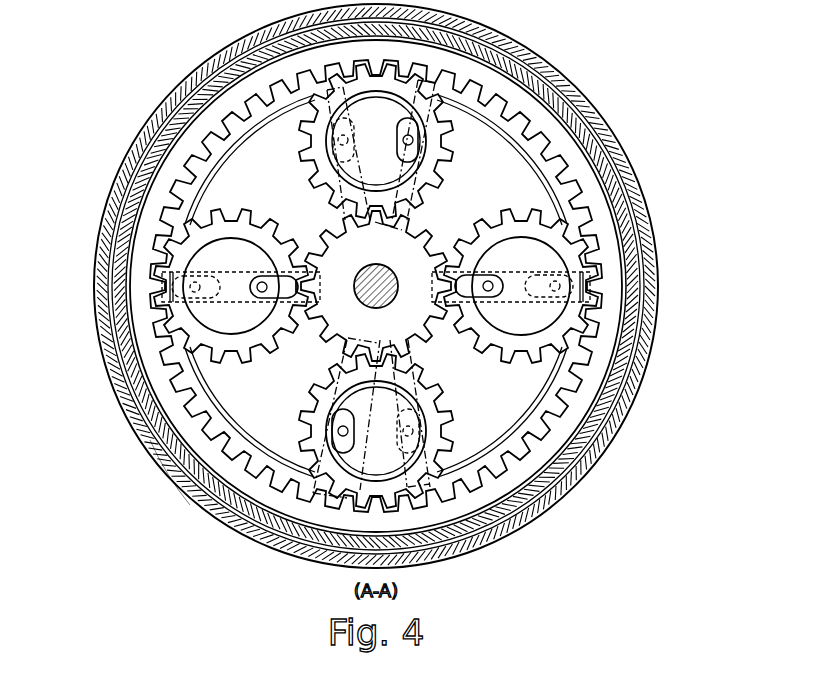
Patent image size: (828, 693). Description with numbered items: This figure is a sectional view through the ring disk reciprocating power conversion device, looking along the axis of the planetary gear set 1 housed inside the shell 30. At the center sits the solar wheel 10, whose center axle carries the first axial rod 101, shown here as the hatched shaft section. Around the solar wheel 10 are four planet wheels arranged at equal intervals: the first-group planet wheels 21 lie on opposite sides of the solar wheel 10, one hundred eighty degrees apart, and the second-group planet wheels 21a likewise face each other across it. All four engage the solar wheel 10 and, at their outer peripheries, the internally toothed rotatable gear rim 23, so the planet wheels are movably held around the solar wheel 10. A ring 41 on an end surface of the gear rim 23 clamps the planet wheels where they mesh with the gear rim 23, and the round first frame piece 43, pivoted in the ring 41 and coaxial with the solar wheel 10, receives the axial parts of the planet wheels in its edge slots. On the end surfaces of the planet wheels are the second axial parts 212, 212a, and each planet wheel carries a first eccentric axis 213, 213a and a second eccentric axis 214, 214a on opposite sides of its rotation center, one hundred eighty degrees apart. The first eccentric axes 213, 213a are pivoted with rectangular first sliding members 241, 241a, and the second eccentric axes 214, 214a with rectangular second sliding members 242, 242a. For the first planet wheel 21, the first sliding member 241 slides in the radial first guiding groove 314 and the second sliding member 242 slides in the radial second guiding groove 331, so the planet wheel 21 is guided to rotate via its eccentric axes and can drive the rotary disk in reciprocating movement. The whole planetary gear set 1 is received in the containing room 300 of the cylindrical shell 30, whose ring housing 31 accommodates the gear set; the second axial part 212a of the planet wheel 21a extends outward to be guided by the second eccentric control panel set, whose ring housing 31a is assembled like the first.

The planetary gear set 1 is at (222, 373).
The solar wheel 10 is at (417, 324).
The first axial rod 101 is at (390, 278).
The planet wheel 21 is at (553, 260).
The planet wheel 21a is at (213, 143).
The gear rim 23 is at (557, 470).
The shell 30 is at (113, 267).
The ring housing 31 is at (522, 511).
The ring housing 31a is at (222, 515).
The ring 41 is at (170, 213).
The first frame piece 43 is at (190, 187).
The second axial part 212 is at (570, 262).
The second axial part 212a is at (325, 42).
The first eccentric axis 213 is at (583, 285).
The first eccentric axis 213a is at (335, 150).
The second eccentric axis 214 is at (580, 327).
The second eccentric axis 214a is at (416, 140).
The first sliding member 241 is at (590, 303).
The first sliding member 241a is at (300, 82).
The second sliding member 242 is at (577, 372).
The second sliding member 242a is at (425, 162).
The containing room 300 is at (272, 403).
The first guiding groove 314 is at (187, 347).
The second guiding groove 331 is at (183, 325).